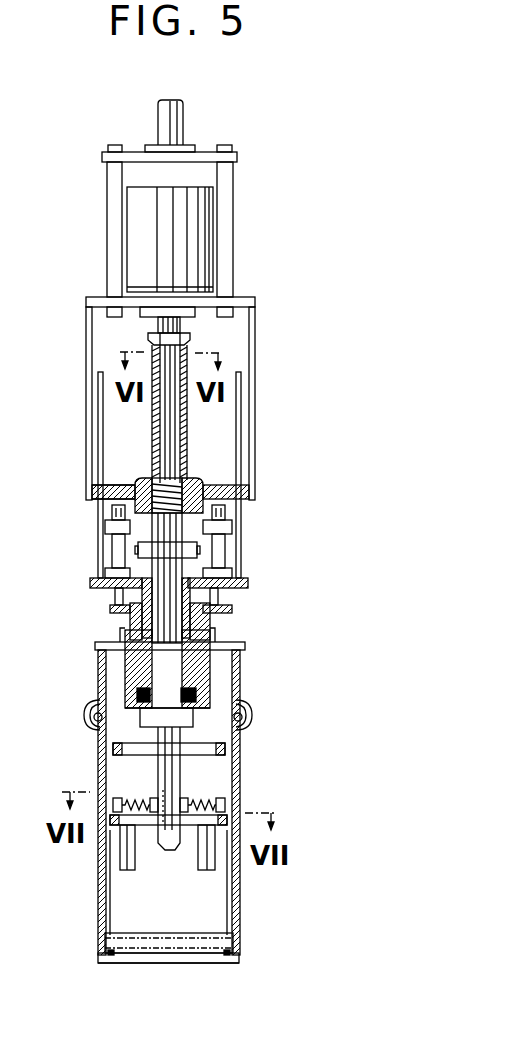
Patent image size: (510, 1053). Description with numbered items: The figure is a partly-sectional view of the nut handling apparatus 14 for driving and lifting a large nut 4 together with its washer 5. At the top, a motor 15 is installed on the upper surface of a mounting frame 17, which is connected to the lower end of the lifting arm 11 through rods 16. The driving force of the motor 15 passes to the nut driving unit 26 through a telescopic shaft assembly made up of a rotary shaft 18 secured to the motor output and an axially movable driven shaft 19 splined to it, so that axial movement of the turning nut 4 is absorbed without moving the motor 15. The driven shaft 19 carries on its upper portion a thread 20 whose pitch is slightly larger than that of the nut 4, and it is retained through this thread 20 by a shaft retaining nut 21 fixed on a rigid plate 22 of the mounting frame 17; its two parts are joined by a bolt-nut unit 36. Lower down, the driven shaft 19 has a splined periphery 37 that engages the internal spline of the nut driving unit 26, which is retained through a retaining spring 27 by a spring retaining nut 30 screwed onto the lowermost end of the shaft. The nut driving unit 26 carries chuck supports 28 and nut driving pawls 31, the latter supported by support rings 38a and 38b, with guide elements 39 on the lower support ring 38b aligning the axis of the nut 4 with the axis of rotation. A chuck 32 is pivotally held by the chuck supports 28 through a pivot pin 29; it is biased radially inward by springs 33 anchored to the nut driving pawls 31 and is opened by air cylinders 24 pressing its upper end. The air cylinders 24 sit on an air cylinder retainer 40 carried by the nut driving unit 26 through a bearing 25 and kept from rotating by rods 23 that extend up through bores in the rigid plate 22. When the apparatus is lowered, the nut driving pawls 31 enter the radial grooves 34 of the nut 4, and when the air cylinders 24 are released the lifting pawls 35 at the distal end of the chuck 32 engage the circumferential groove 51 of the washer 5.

The nut 4 is at (234, 935).
The washer 5 is at (235, 958).
The lifting arm 11 is at (184, 120).
The nut handling apparatus 14 is at (85, 321).
The motor 15 is at (207, 205).
The rods 16 is at (233, 226).
The mounting frame 17 is at (250, 297).
The rotary shaft 18 is at (182, 322).
The driven shaft 19 is at (187, 408).
The thread 20 is at (184, 488).
The shaft retaining nut 21 is at (204, 490).
The rigid plate 22 is at (120, 487).
The rods 23 is at (97, 509).
The air cylinders 24 is at (112, 562).
The bearing 25 is at (129, 628).
The nut driving unit 26 is at (233, 660).
The retaining spring 27 is at (138, 690).
The chuck supports 28 is at (98, 704).
The pivot pin 29 is at (243, 727).
The spring retaining nut 30 is at (150, 727).
The nut driving pawls 31 is at (172, 838).
The chuck 32 is at (240, 903).
The springs 33 is at (208, 806).
The radial grooves 34 is at (162, 850).
The lifting pawls 35 is at (104, 961).
The bolt-nut unit 36 is at (122, 540).
The splined periphery 37 is at (165, 665).
The support ring 38a is at (145, 755).
The lower support ring 38b is at (148, 826).
The guide elements 39 is at (130, 845).
The air cylinder retainer 40 is at (226, 600).
The circumferential groove 51 is at (231, 953).